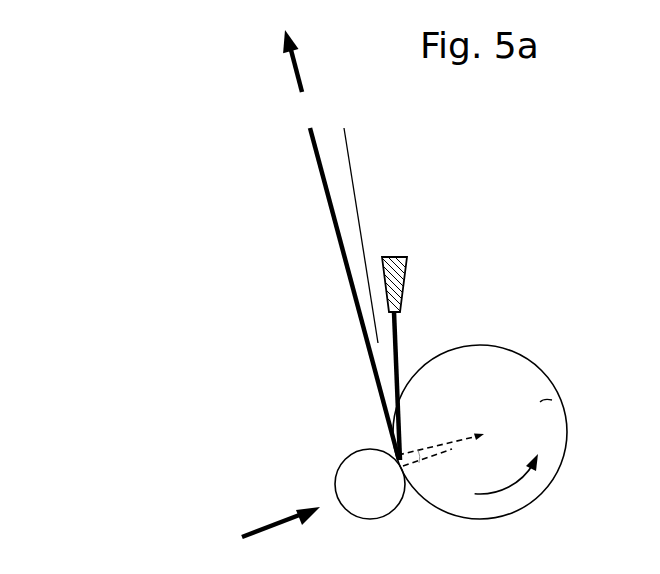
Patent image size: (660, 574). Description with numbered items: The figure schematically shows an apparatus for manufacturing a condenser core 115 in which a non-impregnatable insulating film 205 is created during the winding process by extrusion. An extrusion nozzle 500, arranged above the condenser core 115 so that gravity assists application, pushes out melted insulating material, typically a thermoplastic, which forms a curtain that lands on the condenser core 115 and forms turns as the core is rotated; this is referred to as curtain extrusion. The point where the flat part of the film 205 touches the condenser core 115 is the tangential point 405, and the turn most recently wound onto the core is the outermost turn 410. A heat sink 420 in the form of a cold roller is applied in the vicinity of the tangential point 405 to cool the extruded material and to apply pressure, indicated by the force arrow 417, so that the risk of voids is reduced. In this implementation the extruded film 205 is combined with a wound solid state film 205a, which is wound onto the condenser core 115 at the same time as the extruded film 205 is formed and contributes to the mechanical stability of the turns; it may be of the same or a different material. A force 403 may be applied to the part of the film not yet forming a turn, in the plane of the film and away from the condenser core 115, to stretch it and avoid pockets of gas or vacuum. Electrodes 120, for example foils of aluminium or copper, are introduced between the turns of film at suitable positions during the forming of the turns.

The force 403 is at (290, 77).
The wound solid state film 205a is at (329, 212).
The electrode 120 is at (352, 163).
The extrusion nozzle 500 is at (406, 275).
The non-impregnatable insulating film 205 is at (394, 340).
The tangential point 405 is at (395, 460).
The heat sink 420 is at (348, 474).
The force arrow 417 is at (273, 520).
The outermost turn 410 is at (567, 418).
The condenser core 115 is at (546, 402).